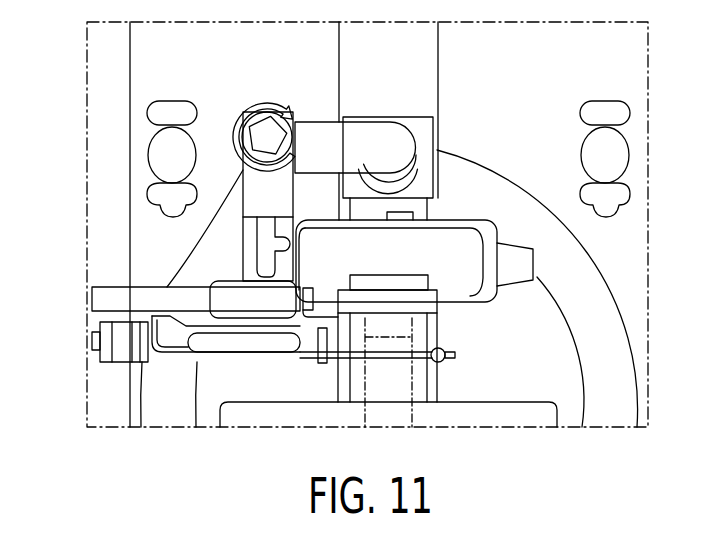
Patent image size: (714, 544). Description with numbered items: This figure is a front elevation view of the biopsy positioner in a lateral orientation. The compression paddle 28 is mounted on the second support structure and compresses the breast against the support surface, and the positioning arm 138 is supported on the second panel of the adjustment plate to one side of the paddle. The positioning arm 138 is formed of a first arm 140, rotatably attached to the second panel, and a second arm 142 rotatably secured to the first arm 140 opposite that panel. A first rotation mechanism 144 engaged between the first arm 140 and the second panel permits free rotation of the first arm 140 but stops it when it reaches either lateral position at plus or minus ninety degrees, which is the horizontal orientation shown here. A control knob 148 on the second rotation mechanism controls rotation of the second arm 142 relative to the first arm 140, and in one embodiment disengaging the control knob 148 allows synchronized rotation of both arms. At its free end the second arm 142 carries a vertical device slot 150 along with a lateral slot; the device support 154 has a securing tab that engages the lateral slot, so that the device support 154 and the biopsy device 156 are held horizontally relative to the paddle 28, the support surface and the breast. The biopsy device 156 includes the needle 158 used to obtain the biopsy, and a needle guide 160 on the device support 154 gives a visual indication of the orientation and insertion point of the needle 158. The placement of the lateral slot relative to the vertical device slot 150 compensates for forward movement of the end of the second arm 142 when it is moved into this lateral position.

The compression paddle 28 is at (428, 297).
The positioning arm 138 is at (311, 112).
The first arm 140 is at (368, 138).
The second arm 142 is at (262, 188).
The first rotation mechanism 144 is at (427, 182).
The control knob 148 is at (259, 117).
The device slot 150 is at (243, 250).
The device support 154 is at (110, 287).
The biopsy device 156 is at (118, 348).
The needle 158 is at (358, 362).
The needle guide 160 is at (313, 288).